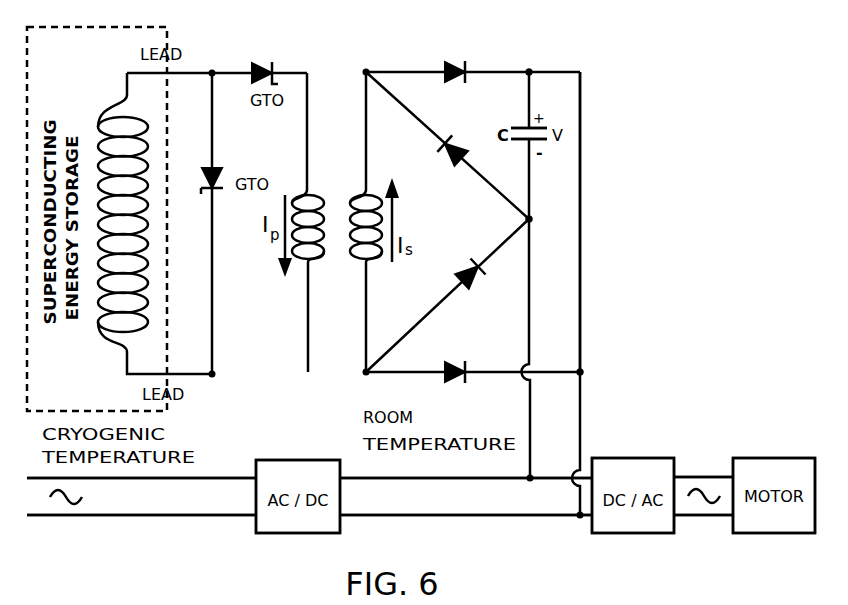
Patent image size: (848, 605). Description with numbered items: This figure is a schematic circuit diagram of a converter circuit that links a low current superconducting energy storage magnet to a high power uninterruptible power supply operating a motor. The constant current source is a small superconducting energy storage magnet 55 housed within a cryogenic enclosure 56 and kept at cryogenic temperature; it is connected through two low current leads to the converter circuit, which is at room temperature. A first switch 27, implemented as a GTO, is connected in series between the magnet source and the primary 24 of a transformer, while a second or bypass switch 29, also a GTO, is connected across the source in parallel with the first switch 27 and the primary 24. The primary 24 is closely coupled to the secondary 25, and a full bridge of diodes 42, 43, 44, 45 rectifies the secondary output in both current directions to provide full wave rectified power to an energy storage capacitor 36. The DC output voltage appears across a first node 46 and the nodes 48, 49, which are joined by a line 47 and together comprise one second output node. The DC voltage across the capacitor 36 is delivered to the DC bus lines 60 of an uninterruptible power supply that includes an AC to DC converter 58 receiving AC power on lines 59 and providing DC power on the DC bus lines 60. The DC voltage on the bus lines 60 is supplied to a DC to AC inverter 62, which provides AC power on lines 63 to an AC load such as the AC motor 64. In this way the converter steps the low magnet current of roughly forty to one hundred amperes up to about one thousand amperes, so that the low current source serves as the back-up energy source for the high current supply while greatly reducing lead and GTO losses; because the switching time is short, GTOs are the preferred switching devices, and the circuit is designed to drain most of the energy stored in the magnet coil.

The superconducting energy storage magnet 55 is at (105, 100).
The cryogenic enclosure 56 is at (30, 401).
The first switch 27 is at (262, 66).
The second or bypass switch 29 is at (220, 177).
The primary 24 is at (304, 268).
The secondary 25 is at (370, 258).
The diode 42 is at (452, 64).
The diode 43 is at (460, 146).
The diode 44 is at (478, 262).
The diode 45 is at (455, 365).
The node 48 is at (531, 70).
The energy storage capacitor 36 is at (547, 145).
The line 47 is at (583, 244).
The first node 46 is at (536, 221).
The node 49 is at (583, 371).
The AC to DC converter 58 is at (322, 458).
The lines 59 is at (205, 515).
The DC bus lines 60 is at (483, 515).
The DC to AC inverter 62 is at (620, 458).
The lines 63 is at (694, 476).
The AC motor 64 is at (793, 534).